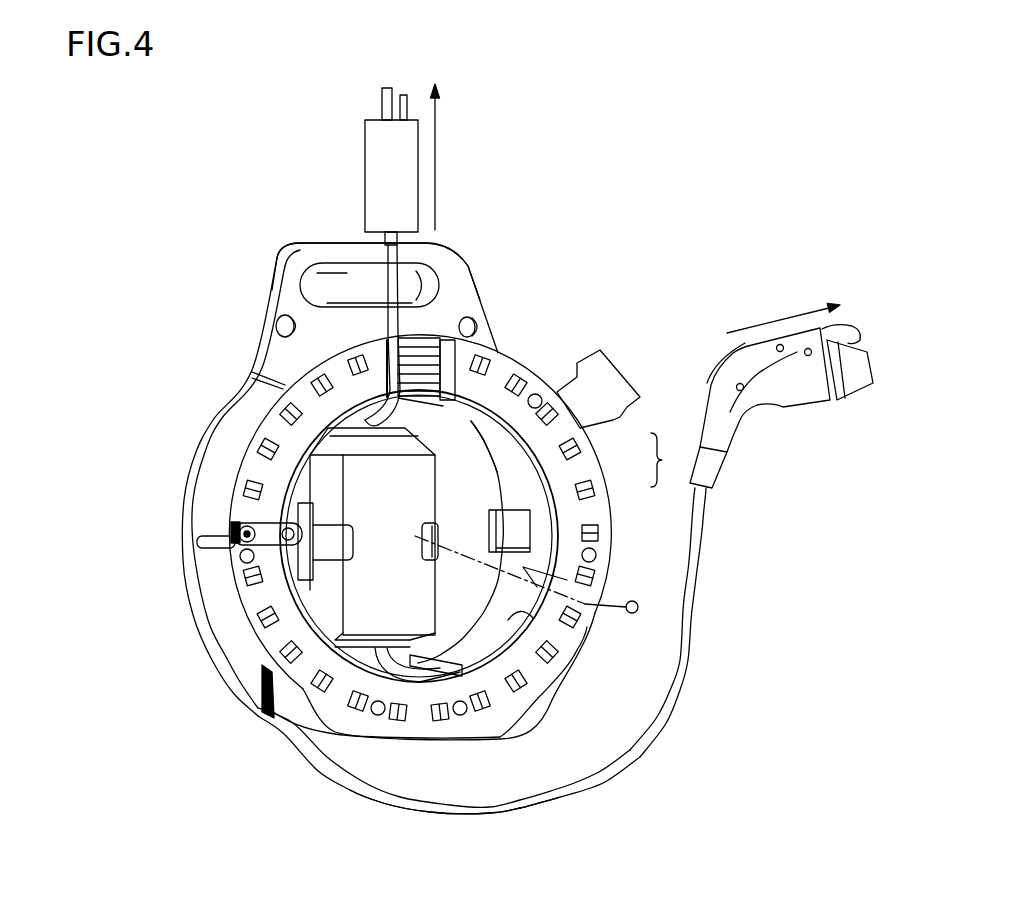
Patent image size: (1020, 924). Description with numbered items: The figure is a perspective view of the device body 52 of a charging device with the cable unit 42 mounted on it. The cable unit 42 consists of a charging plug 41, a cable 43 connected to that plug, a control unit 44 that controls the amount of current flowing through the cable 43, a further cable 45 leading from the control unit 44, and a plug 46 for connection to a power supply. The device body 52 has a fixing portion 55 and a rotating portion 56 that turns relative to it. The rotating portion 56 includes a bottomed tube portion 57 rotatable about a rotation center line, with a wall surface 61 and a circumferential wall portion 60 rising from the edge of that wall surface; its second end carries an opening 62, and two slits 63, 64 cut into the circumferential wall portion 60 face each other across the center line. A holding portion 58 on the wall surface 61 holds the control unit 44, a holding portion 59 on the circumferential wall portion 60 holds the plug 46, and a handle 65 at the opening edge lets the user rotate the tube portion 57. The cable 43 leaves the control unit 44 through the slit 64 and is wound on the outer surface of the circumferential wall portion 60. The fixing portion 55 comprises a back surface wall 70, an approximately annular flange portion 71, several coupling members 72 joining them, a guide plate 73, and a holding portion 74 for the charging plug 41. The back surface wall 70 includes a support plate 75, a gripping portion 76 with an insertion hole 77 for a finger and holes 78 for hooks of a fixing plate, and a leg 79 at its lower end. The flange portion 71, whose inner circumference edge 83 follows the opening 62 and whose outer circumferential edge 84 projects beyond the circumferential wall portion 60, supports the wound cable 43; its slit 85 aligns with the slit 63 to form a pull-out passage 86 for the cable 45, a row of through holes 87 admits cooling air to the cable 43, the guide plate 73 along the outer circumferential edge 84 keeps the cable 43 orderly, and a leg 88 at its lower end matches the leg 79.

The charging plug 41 is at (792, 390).
The cable unit 42 is at (472, 832).
The cable 43 is at (652, 737).
The control unit 44 is at (465, 672).
The cable 45 is at (388, 240).
The plug 46 is at (380, 178).
The device body 52 is at (300, 150).
The fixing portion 55 is at (501, 312).
The rotating portion 56 is at (493, 430).
The tube portion 57 is at (670, 460).
The holding portion 58 is at (437, 562).
The holding portion 59 is at (517, 530).
The circumferential wall portion 60 is at (523, 500).
The wall surface 61 is at (483, 473).
The opening 62 is at (530, 617).
The slit 63 is at (447, 340).
The slit 64 is at (430, 677).
The handle 65 is at (240, 558).
The back surface wall 70 is at (268, 287).
The flange portion 71 is at (277, 437).
The coupling member 72 is at (218, 545).
The guide plate 73 is at (262, 375).
The holding portion 74 is at (603, 387).
The support plate 75 is at (213, 633).
The gripping portion 76 is at (284, 235).
The insertion hole 77 is at (317, 273).
The hole 78 is at (285, 326).
The leg 79 is at (255, 722).
The inner circumference edge 83 is at (281, 477).
The outer circumferential edge 84 is at (191, 497).
The slit 85 is at (432, 345).
The pull-out passage 86 is at (515, 182).
The through hole 87 is at (243, 617).
The leg 88 is at (328, 725).